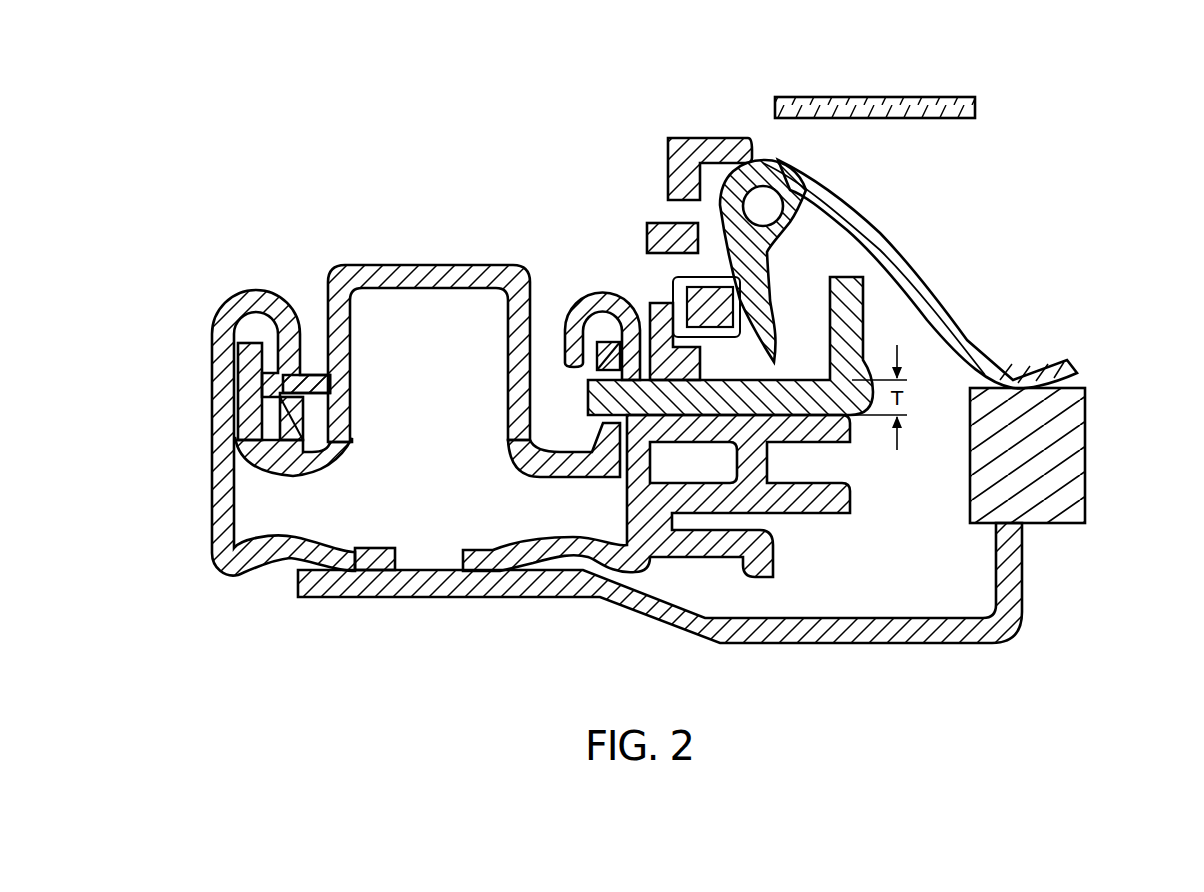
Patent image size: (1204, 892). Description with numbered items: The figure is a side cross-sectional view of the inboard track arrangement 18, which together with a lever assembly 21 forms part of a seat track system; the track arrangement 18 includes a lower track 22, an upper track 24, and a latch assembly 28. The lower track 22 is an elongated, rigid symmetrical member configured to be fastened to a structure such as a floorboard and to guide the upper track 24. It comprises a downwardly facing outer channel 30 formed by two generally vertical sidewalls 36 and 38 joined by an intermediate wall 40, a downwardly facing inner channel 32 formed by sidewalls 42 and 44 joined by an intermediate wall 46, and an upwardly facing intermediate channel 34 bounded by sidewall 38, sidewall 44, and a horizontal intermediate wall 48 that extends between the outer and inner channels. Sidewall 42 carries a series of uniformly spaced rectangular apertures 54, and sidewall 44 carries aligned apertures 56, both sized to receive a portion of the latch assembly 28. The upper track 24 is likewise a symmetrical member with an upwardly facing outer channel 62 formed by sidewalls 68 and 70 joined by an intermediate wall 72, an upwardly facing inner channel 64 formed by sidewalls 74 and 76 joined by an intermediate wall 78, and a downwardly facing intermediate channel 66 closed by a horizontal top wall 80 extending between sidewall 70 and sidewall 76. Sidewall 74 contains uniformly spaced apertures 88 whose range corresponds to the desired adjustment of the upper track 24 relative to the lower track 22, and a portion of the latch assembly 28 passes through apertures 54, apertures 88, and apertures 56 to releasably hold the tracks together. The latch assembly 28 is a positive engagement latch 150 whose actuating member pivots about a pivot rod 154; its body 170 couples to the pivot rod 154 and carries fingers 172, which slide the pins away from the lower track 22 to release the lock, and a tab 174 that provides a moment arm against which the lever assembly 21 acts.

The inboard track arrangement 18 is at (293, 204).
The lever assembly 21 is at (1090, 442).
The lower track 22 is at (222, 574).
The upper track 24 is at (375, 262).
The latch assembly 28 is at (978, 256).
The outer channel 30 is at (262, 378).
The inner channel 32 is at (568, 335).
The intermediate channel 34 is at (465, 367).
The sidewall 36 is at (212, 450).
The sidewall 38 is at (305, 330).
The intermediate wall 40 is at (257, 290).
The sidewall 42 is at (615, 470).
The sidewall 44 is at (543, 410).
The intermediate wall 46 is at (598, 333).
The intermediate wall 48 is at (362, 550).
The apertures 54 is at (707, 383).
The apertures 56 is at (560, 340).
The outer channel 62 is at (263, 440).
The inner channel 64 is at (495, 428).
The intermediate channel 66 is at (372, 548).
The sidewall 68 is at (268, 350).
The sidewall 70 is at (352, 360).
The intermediate wall 72 is at (292, 478).
The sidewall 74 is at (612, 338).
The sidewall 76 is at (520, 348).
The intermediate wall 78 is at (550, 473).
The intermediate wall 80 is at (427, 264).
The apertures 88 is at (582, 458).
The positive engagement latch 150 is at (882, 96).
The pivot rod 154 is at (768, 205).
The body 170 is at (758, 157).
The fingers 172 is at (766, 283).
The tab 174 is at (990, 352).